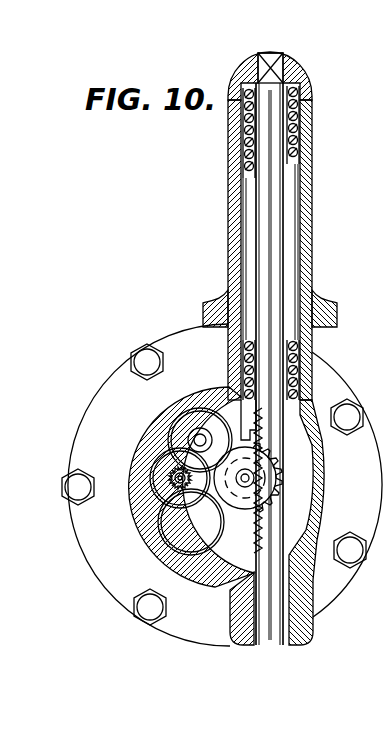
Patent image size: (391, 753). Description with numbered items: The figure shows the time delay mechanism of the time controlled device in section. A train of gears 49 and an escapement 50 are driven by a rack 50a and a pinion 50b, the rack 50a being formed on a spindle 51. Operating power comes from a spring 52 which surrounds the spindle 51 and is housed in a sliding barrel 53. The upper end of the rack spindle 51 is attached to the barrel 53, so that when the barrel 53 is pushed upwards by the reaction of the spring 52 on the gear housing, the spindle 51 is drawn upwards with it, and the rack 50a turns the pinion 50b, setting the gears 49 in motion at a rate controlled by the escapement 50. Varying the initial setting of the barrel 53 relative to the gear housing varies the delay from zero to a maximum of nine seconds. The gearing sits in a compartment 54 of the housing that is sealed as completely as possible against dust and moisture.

The train of gears 49 is at (185, 458).
The escapement 50 is at (180, 530).
The rack 50a is at (262, 458).
The pinion 50b is at (262, 485).
The spindle 51 is at (284, 288).
The spring 52 is at (297, 158).
The sliding barrel 53 is at (313, 211).
The compartment 54 is at (158, 428).